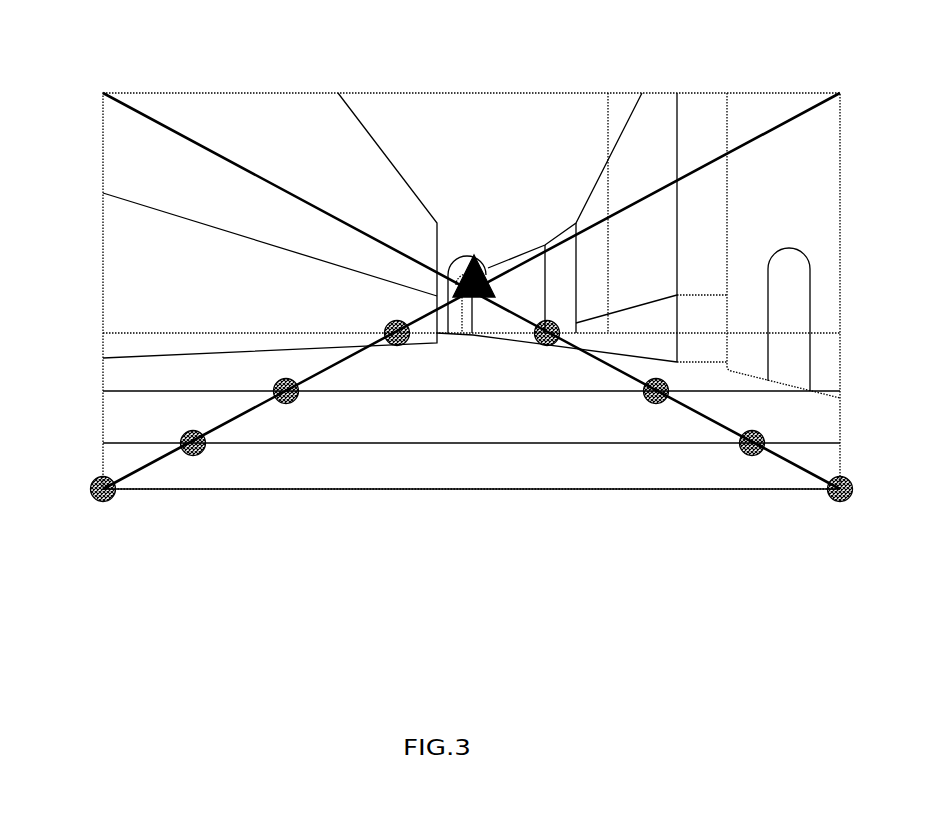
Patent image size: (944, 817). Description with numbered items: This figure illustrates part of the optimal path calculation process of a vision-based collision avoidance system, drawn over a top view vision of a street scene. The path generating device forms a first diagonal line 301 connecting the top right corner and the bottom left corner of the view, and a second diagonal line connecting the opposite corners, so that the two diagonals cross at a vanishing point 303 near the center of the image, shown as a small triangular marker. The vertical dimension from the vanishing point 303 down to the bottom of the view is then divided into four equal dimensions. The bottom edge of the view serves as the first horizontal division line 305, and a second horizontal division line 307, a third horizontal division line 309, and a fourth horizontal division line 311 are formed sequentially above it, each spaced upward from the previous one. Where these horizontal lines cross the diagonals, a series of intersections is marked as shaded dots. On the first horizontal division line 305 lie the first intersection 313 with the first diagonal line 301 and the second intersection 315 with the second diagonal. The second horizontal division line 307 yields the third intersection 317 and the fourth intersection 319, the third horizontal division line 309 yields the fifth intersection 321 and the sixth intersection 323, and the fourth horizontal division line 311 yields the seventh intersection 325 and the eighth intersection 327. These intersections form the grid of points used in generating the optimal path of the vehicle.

The first diagonal line 301 is at (220, 157).
The vanishing point 303 is at (474, 255).
The first horizontal division line 305 is at (151, 491).
The second horizontal division line 307 is at (134, 443).
The third horizontal division line 309 is at (134, 391).
The fourth horizontal division line 311 is at (134, 333).
The first intersection 313 is at (103, 502).
The second intersection 315 is at (840, 502).
The third intersection 317 is at (193, 456).
The fourth intersection 319 is at (752, 456).
The fifth intersection 321 is at (286, 404).
The sixth intersection 323 is at (656, 404).
The seventh intersection 325 is at (398, 346).
The eighth intersection 327 is at (548, 346).